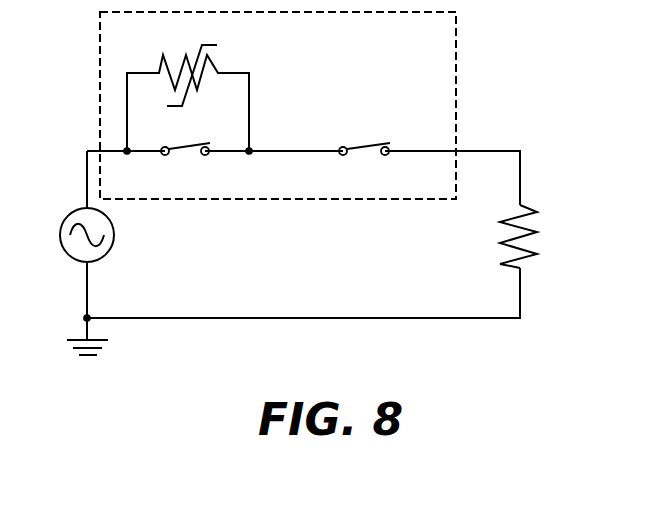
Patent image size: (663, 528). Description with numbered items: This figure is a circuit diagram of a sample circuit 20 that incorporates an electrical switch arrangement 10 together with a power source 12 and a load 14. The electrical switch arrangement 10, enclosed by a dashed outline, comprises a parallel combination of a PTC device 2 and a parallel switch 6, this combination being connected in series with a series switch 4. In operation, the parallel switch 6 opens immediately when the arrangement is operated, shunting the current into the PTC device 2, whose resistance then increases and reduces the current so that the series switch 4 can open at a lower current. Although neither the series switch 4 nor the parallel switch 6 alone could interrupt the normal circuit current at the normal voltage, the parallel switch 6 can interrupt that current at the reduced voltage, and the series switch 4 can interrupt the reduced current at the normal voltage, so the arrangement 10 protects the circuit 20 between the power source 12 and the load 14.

The PTC device 2 is at (173, 63).
The series switch 4 is at (367, 157).
The parallel switch 6 is at (188, 157).
The electrical switch arrangement 10 is at (400, 65).
The power source 12 is at (122, 238).
The load 14 is at (527, 243).
The circuit 20 is at (482, 102).